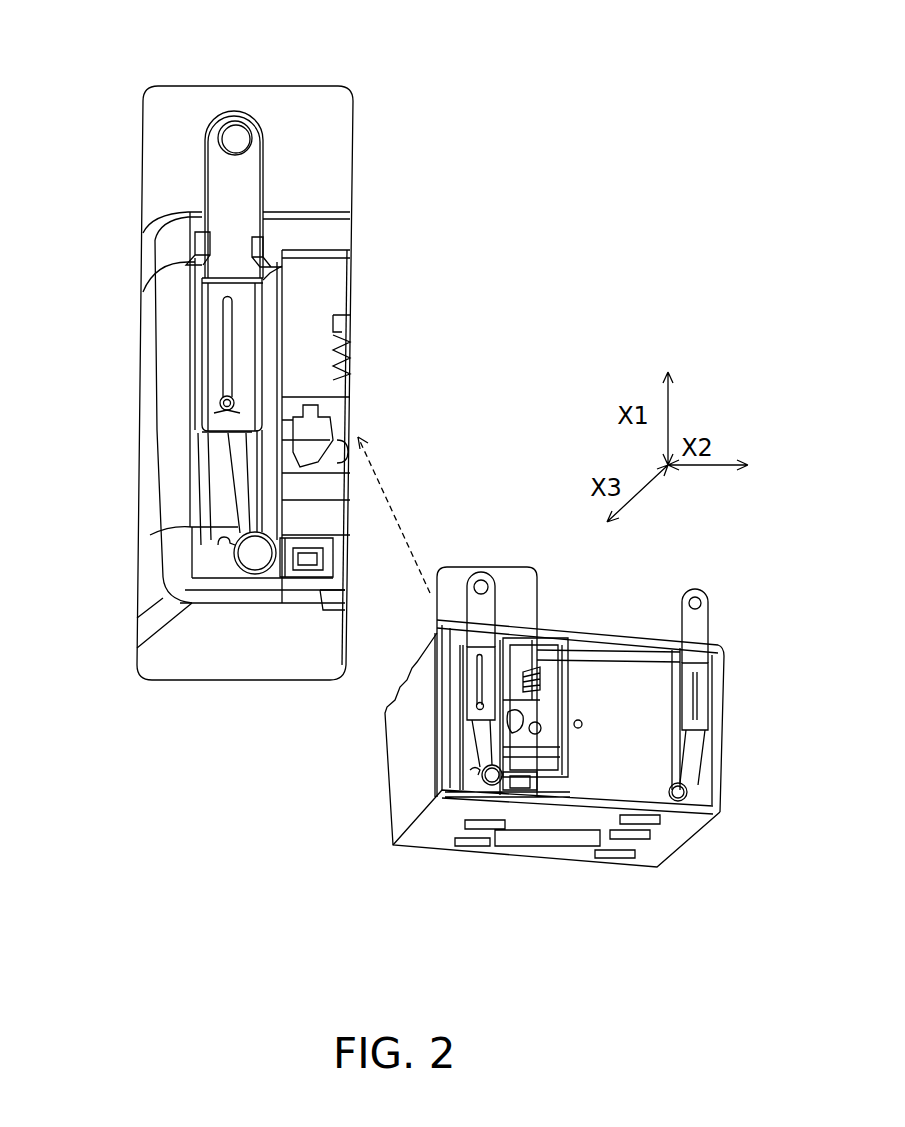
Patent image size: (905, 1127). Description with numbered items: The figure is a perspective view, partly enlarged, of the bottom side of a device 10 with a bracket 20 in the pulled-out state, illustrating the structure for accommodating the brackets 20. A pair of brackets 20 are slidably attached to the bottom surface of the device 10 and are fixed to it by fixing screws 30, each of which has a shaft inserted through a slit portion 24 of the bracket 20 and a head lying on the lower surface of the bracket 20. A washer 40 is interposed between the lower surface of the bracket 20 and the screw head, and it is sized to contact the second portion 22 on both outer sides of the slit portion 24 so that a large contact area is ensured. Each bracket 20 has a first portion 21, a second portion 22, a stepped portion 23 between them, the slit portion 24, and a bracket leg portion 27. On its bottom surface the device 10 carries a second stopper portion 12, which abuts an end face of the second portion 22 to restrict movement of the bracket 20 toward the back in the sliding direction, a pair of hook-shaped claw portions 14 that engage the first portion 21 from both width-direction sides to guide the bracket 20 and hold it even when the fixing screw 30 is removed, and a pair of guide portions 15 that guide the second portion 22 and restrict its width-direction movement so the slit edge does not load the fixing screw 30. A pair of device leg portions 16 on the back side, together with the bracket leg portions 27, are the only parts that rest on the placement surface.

The device 10 is at (547, 873).
The second stopper portion 12 is at (218, 538).
The claw portion 14 is at (197, 238).
The guide portion 15 is at (200, 432).
The device leg portion 16 is at (258, 555).
The bracket 20 is at (429, 397).
The first portion 21 is at (245, 205).
The second portion 22 is at (243, 354).
The stepped portion 23 is at (282, 266).
The slit portion 24 is at (228, 337).
The bracket leg portion 27 is at (235, 138).
The fixing screw 30 is at (232, 399).
The washer 40 is at (222, 401).